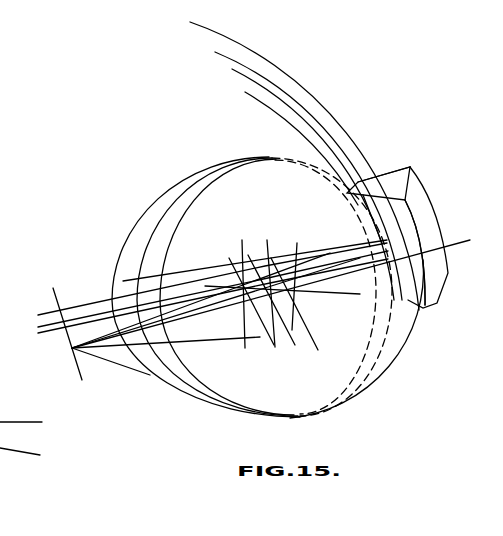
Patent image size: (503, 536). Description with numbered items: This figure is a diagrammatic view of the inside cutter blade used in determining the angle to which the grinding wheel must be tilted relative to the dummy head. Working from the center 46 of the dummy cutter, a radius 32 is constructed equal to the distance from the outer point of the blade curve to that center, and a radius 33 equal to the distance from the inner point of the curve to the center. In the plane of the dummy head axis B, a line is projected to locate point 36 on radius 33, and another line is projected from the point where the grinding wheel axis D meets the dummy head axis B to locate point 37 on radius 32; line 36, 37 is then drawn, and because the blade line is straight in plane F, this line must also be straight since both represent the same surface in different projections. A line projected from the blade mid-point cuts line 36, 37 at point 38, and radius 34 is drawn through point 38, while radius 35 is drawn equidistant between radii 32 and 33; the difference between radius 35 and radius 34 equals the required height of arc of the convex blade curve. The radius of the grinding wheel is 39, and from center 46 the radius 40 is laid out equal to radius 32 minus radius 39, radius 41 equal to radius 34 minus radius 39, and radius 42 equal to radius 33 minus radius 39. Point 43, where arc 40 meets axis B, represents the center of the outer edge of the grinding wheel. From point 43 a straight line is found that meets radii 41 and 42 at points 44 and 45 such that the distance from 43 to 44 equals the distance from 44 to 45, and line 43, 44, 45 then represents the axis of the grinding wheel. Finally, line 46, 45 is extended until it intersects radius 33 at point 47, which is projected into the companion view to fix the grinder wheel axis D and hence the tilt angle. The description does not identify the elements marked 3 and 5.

The prism block 3 is at (445, 283).
The lens 5 is at (168, 235).
The radius 32 is at (72, 348).
The radius 33 is at (245, 95).
The radius 34 is at (233, 67).
The radius 35 is at (163, 170).
The point 36 is at (367, 230).
The point 37 is at (413, 253).
The point 38 is at (382, 243).
The radius of the grinding wheel 39 is at (407, 338).
The radius 40 is at (288, 390).
The radius 41 is at (273, 357).
The radius 42 is at (253, 327).
The point 43 is at (297, 279).
The point 44 is at (268, 285).
The point 45 is at (241, 281).
The center 46 is at (199, 320).
The point 47 is at (387, 244).
The axis AB B is at (280, 289).
The axis CD D is at (31, 422).
The plane EF F is at (29, 456).